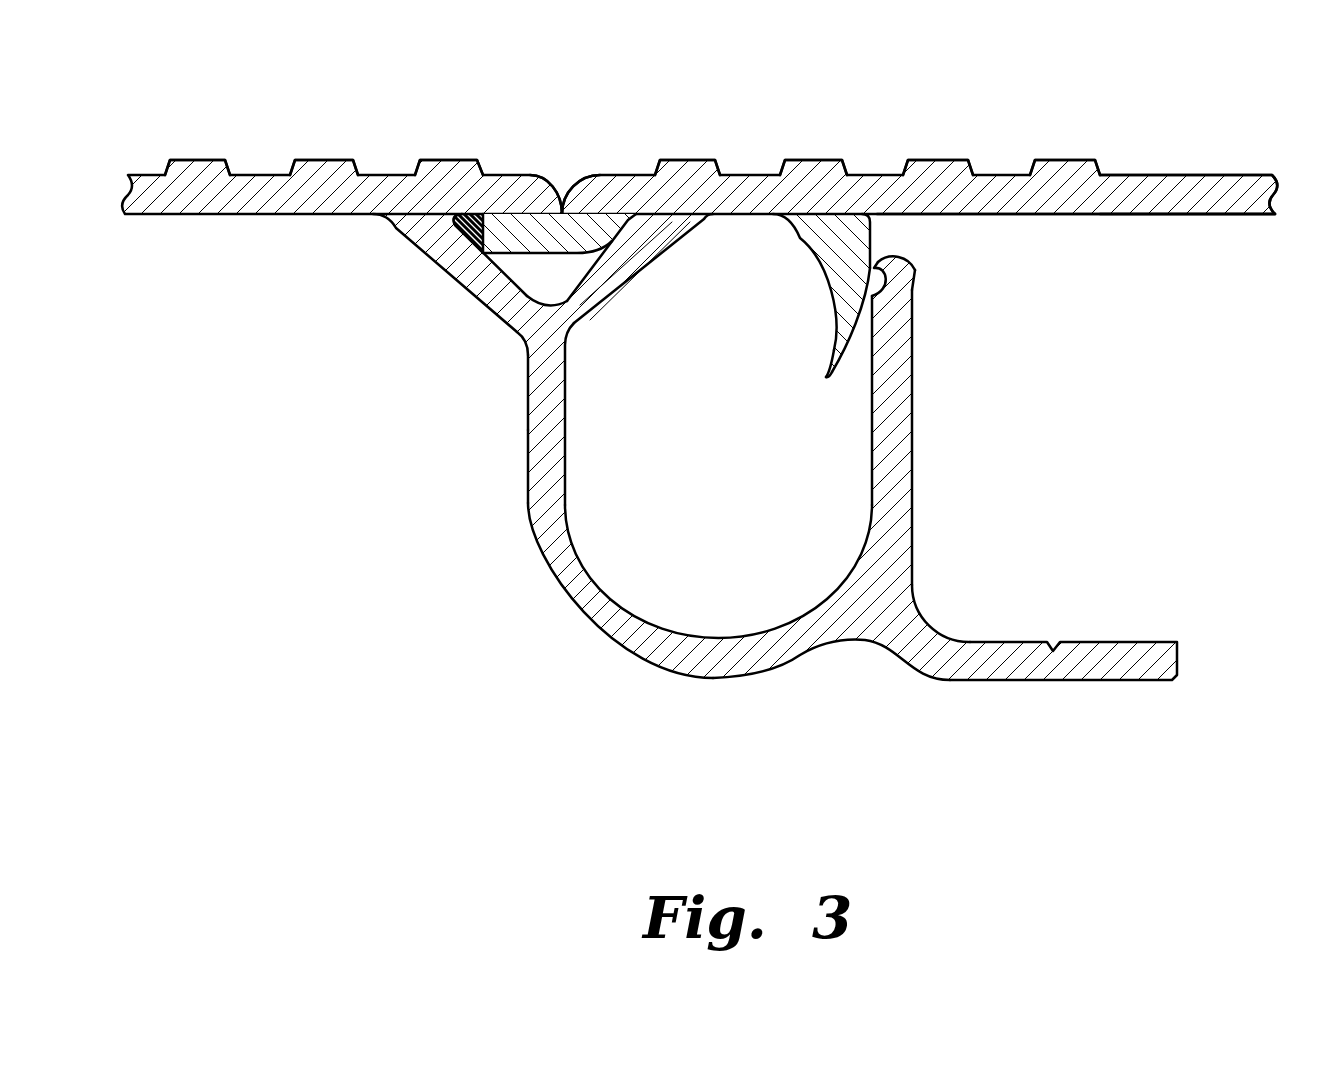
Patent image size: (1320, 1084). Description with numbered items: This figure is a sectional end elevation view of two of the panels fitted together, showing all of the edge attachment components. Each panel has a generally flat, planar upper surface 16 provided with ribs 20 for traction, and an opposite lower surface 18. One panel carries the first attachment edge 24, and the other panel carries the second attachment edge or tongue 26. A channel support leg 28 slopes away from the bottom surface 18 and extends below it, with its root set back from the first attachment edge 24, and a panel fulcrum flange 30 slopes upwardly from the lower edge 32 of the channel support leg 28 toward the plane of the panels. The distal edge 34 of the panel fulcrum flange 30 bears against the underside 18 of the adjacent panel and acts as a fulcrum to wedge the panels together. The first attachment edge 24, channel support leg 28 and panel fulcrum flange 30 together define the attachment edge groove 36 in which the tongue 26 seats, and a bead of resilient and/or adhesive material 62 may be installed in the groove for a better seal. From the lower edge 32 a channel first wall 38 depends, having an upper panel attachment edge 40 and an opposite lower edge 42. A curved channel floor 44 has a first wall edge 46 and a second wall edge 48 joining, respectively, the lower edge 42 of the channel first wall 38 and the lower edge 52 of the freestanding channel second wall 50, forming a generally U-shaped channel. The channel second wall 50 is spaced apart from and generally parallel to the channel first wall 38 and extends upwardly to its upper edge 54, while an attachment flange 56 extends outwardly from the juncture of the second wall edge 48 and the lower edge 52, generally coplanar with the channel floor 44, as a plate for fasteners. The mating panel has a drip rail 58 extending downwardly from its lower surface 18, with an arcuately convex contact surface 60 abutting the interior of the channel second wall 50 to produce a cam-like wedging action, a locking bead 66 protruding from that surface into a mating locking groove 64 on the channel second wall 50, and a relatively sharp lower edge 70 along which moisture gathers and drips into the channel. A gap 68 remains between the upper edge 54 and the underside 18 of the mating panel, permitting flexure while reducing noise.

The upper surface 16 is at (1200, 172).
The lower surface 18 is at (238, 218).
The ribs 20 is at (322, 165).
The first attachment edge 24 is at (560, 205).
The second attachment edge 26 is at (508, 200).
The channel support leg 28 is at (392, 222).
The panel fulcrum flange 30 is at (652, 260).
The lower edge of the channel support leg 32 is at (525, 340).
The distal edge 34 is at (677, 212).
The attachment edge groove 36 is at (540, 273).
The channel first wall 38 is at (525, 440).
The panel attachment edge 40 is at (570, 340).
The lower edge of the channel first wall 42 is at (526, 510).
The channel floor 44 is at (683, 672).
The first wall edge 46 is at (570, 598).
The second wall edge 48 is at (843, 627).
The channel second wall 50 is at (912, 415).
The lower edge of the channel second wall 52 is at (913, 583).
The upper edge of the channel second wall 54 is at (922, 240).
The attachment flange 56 is at (1118, 640).
The drip rail 58 is at (817, 253).
The contact surface 60 is at (855, 345).
The resilient and/or adhesive material 62 is at (462, 216).
The locking groove 64 is at (890, 280).
The locking bead 66 is at (910, 300).
The gap 68 is at (910, 220).
The lower edge of the drip rail 70 is at (825, 375).